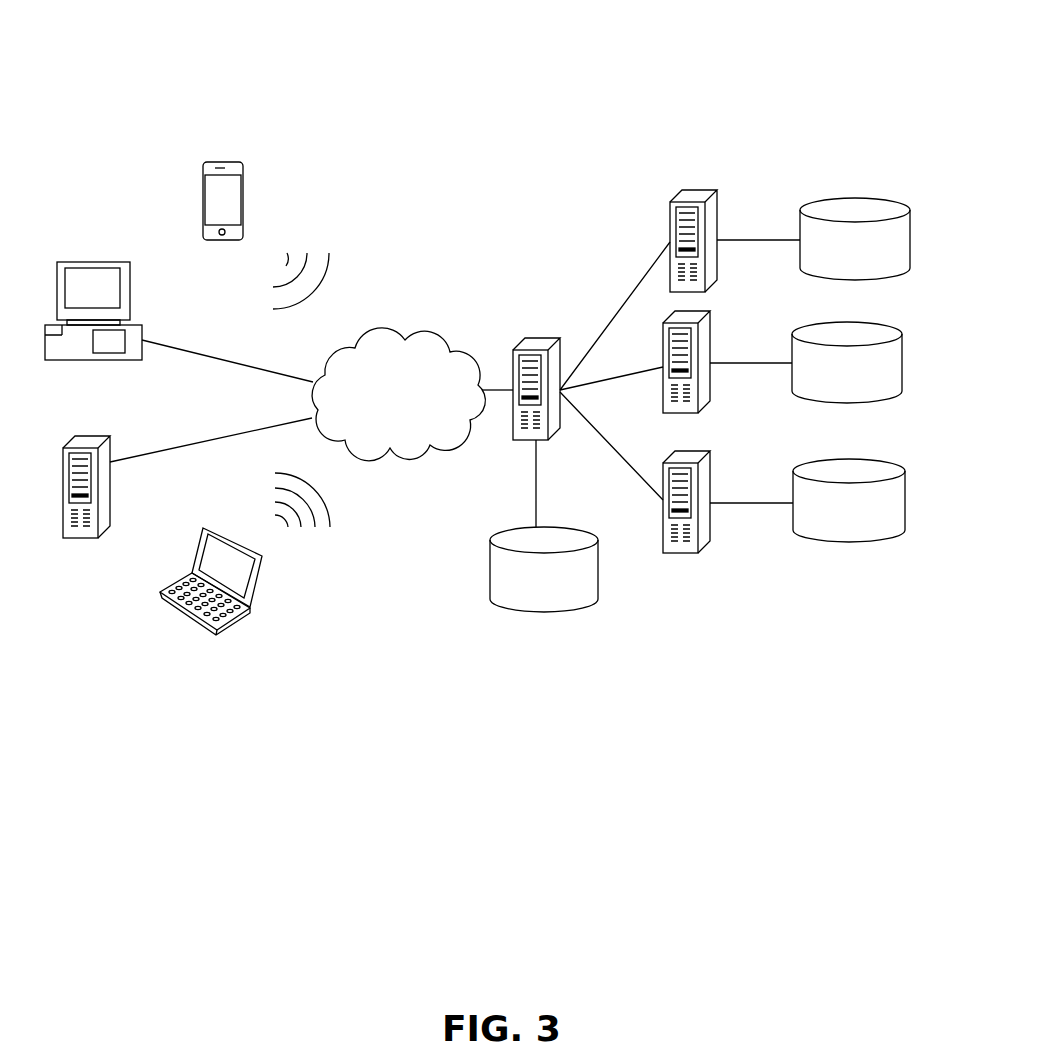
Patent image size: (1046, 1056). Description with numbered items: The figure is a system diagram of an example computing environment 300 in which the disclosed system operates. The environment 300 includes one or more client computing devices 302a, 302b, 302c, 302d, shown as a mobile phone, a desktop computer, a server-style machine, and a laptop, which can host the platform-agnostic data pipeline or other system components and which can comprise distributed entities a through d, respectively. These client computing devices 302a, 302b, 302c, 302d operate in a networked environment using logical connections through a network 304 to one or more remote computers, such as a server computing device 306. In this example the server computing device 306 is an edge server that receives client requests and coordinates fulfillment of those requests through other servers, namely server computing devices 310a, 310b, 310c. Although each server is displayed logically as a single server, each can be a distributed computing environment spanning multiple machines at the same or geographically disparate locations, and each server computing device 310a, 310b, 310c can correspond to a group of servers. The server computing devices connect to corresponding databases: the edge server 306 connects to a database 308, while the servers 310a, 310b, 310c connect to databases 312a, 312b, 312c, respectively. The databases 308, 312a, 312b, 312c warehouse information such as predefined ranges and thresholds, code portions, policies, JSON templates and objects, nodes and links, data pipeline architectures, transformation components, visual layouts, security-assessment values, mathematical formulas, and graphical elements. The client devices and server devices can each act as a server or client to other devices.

The environment 300 is at (478, 82).
The client computing device 302a is at (244, 165).
The client computing device 302b is at (130, 265).
The client computing device 302c is at (100, 436).
The client computing device 302d is at (250, 605).
The network 304 is at (405, 340).
The server computing device 306 is at (545, 340).
The database 308 is at (550, 528).
The server computing device 310a is at (706, 192).
The server computing device 310b is at (700, 316).
The server computing device 310c is at (700, 456).
The database 312a is at (865, 200).
The database 312b is at (855, 323).
The database 312c is at (873, 472).